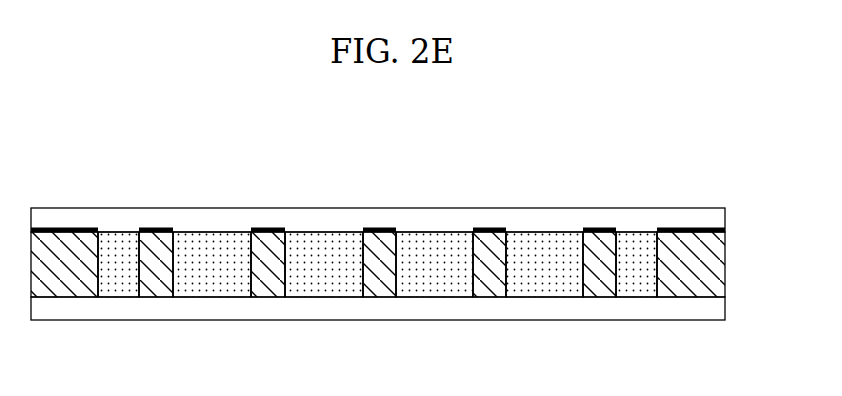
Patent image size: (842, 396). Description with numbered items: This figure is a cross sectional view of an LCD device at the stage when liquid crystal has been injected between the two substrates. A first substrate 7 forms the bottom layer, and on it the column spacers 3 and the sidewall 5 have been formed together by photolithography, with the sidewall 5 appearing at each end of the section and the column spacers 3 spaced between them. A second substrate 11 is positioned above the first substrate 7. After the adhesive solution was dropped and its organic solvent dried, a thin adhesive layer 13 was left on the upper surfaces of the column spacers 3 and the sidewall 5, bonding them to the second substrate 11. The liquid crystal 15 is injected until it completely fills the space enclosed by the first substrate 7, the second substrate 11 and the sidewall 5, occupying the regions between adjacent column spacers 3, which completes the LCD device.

The column spacers 3 is at (154, 292).
The sidewall 5 is at (63, 292).
The first substrate 7 is at (725, 302).
The second substrate 11 is at (725, 210).
The adhesive layer 13 is at (67, 228).
The liquid crystal 15 is at (118, 244).